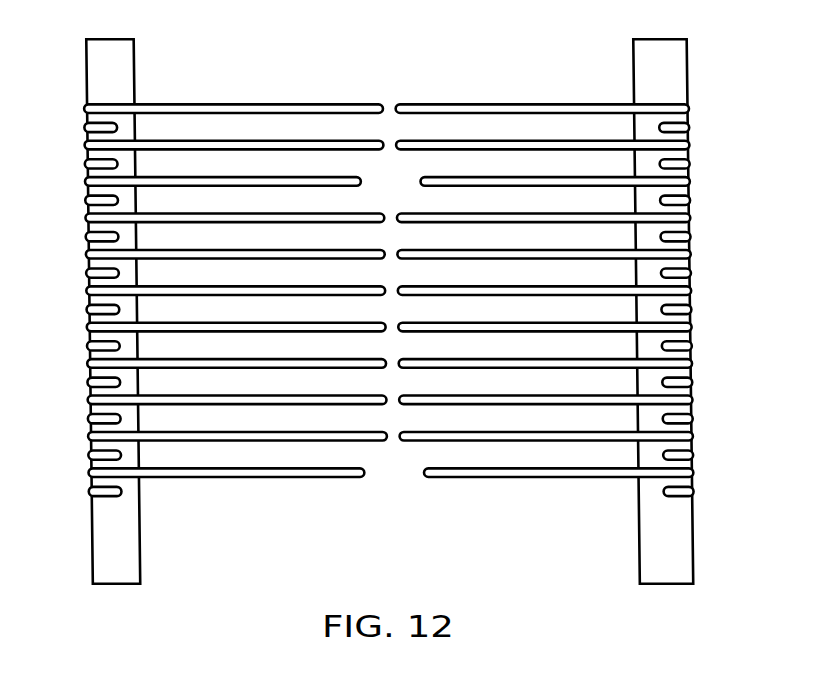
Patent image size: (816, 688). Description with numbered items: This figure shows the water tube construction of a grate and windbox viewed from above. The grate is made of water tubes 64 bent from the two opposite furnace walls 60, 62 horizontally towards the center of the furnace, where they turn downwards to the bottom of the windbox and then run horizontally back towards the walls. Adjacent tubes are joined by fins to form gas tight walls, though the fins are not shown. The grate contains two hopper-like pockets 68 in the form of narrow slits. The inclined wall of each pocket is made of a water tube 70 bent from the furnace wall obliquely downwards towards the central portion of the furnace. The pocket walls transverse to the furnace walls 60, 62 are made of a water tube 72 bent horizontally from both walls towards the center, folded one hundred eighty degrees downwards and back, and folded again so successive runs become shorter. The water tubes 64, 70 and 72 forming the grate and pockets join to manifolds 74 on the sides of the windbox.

The furnace wall 60 is at (680, 195).
The furnace wall 62 is at (102, 233).
The water tube 64 is at (608, 255).
The hopper-like pocket 68 is at (475, 158).
The water tube 70 is at (475, 474).
The water tube 72 is at (265, 143).
The manifold 74 is at (678, 545).